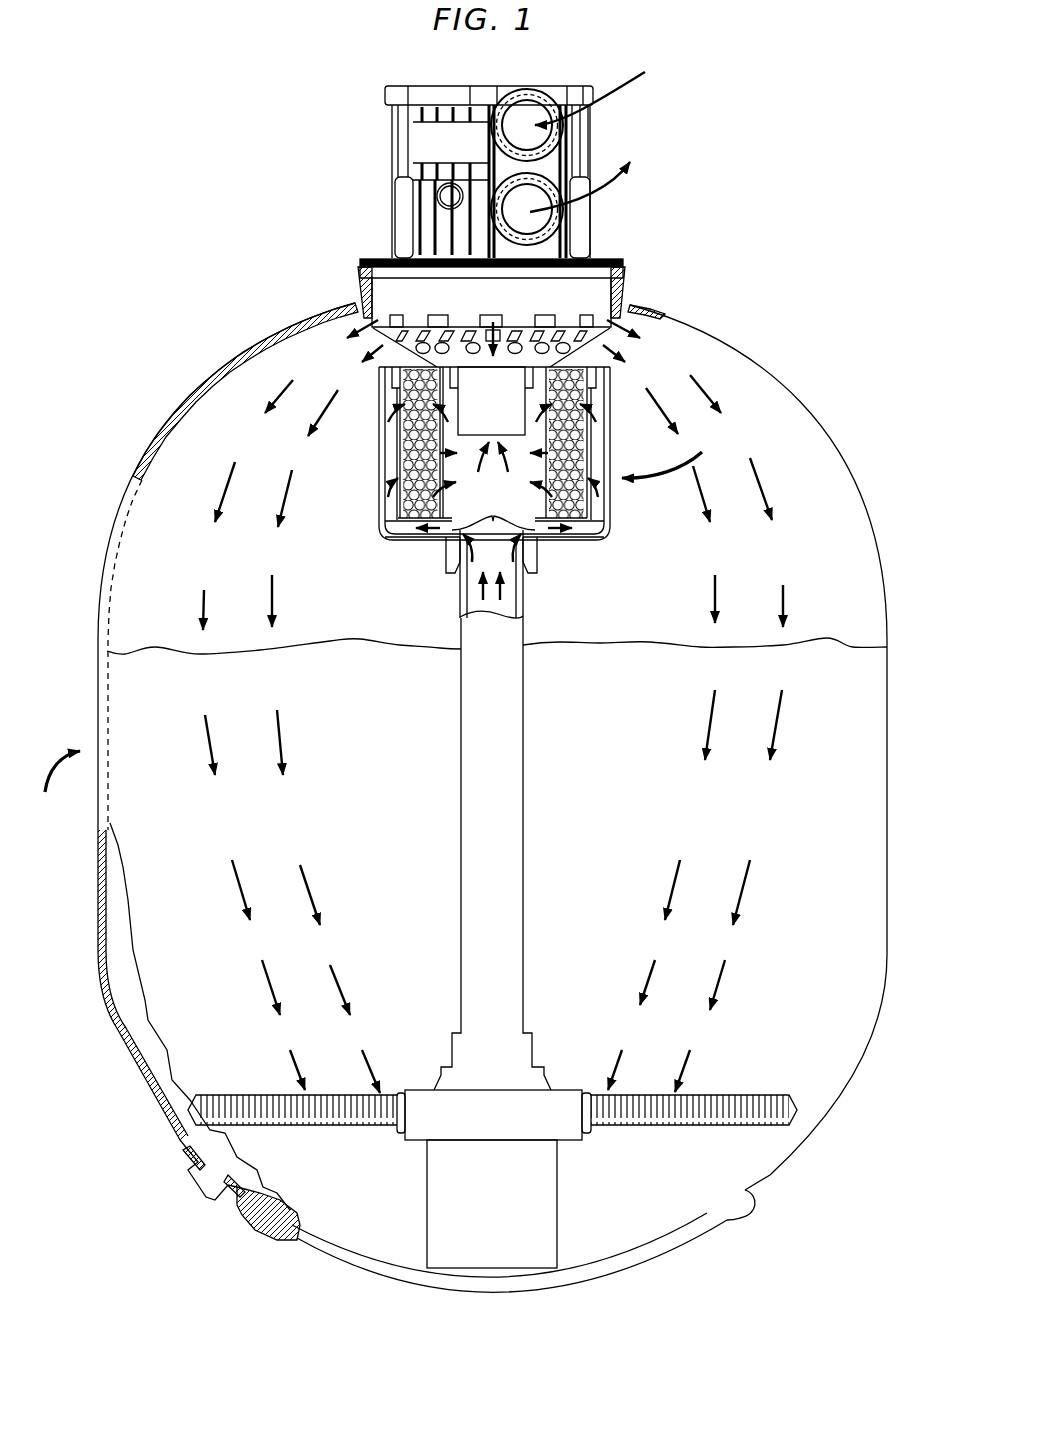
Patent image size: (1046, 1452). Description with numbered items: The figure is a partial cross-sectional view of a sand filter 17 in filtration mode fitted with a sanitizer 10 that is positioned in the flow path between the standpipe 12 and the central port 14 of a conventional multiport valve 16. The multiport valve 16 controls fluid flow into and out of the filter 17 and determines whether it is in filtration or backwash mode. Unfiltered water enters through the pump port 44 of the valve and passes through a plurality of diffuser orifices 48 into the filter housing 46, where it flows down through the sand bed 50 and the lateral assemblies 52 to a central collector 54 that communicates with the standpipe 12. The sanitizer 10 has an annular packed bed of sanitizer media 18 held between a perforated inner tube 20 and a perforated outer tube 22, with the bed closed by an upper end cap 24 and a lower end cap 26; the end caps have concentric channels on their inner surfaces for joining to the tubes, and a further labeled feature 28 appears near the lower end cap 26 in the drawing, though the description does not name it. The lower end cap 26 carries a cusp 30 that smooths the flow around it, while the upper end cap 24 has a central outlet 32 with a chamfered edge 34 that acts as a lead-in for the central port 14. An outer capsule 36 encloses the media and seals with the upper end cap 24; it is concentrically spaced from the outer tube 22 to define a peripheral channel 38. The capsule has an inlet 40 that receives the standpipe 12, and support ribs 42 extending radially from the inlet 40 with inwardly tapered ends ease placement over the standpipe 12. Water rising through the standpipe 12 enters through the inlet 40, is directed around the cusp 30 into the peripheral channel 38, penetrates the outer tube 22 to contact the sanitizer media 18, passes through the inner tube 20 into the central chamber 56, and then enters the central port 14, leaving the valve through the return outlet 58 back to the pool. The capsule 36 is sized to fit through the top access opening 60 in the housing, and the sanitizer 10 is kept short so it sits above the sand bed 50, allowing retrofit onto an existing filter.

The sanitizer 10 is at (493, 706).
The standpipe 12 is at (470, 795).
The central port 14 is at (491, 401).
The multiport valve 16 is at (624, 298).
The filter 17 is at (54, 785).
The sanitizer media 18 is at (598, 538).
The perforated inner tube 20 is at (440, 490).
The perforated outer tube 22 is at (403, 478).
The upper end cap 24 is at (602, 349).
The lower end cap 26 is at (545, 525).
The left bottom channel 28 is at (447, 530).
The cusp 30 is at (500, 532).
The central outlet 32 is at (453, 372).
The chamfered edge 34 is at (410, 418).
The outer capsule 36 is at (592, 502).
The peripheral channel 38 is at (592, 428).
The inlet 40 is at (462, 572).
The support ribs 42 is at (448, 555).
The pump port 44 is at (520, 128).
The filter housing 46 is at (157, 425).
The diffuser orifices 48 is at (366, 303).
The sand bed 50 is at (882, 772).
The lateral assemblies 52 is at (752, 1093).
The central collector 54 is at (495, 1128).
The central chamber 56 is at (494, 507).
The return outlet 58 is at (543, 237).
The top access opening 60 is at (381, 264).